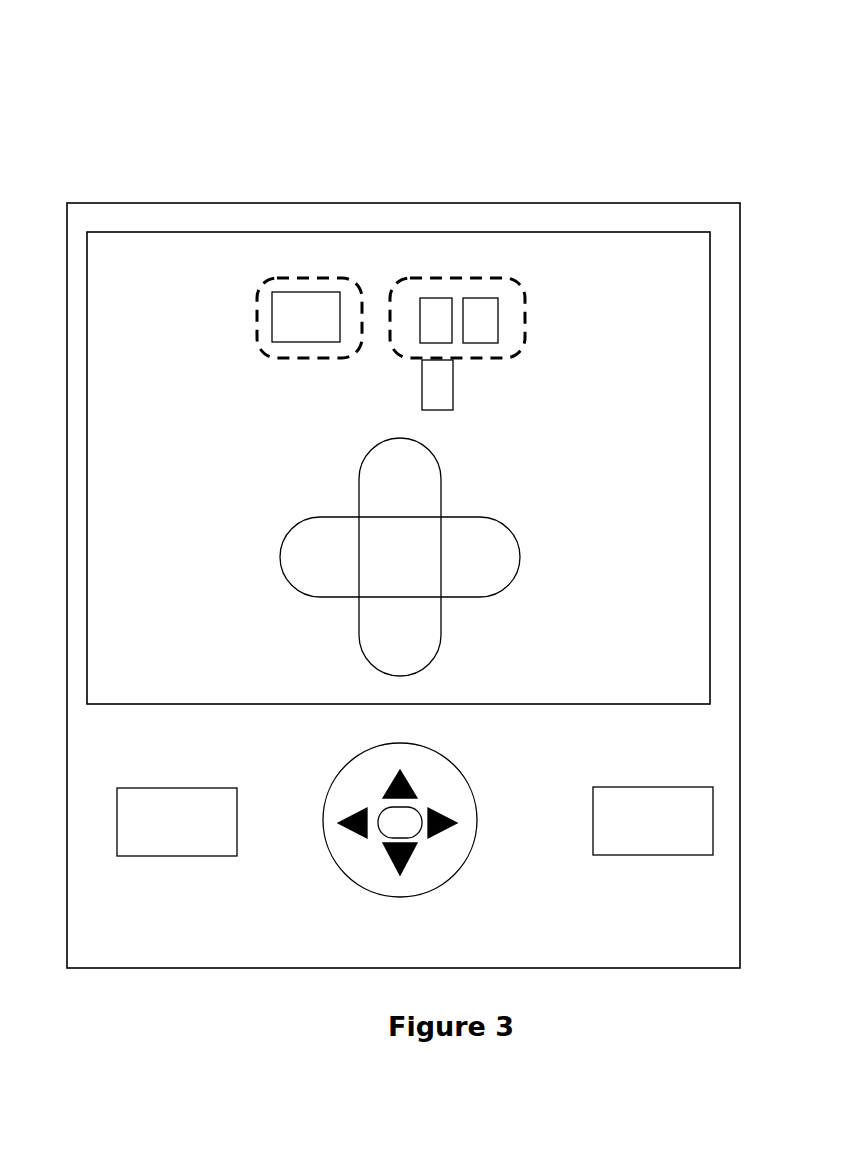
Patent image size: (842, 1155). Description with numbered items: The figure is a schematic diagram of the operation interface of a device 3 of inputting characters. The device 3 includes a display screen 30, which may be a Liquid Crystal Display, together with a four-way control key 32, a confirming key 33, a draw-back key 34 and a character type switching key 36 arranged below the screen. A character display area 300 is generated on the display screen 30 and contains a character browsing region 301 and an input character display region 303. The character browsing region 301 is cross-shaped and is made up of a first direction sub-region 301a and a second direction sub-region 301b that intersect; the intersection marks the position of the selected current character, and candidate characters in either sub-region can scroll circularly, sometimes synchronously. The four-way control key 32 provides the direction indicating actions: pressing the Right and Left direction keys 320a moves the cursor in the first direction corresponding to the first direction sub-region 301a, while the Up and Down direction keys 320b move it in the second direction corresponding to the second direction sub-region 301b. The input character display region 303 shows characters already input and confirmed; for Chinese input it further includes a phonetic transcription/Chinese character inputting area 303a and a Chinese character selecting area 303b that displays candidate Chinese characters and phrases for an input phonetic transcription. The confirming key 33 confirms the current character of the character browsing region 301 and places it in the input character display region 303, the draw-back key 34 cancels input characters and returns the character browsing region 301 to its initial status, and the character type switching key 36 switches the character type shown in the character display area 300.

The device of inputting characters 3 is at (338, 190).
The display screen 30 is at (682, 230).
The character display area 300 is at (628, 275).
The character browsing region 301 is at (548, 523).
The first direction sub-region 301a is at (460, 517).
The second direction sub-region 301b is at (440, 462).
The input character display region 303 is at (545, 313).
The phonetic transcription / Chinese character inputting area 303a is at (320, 278).
The Chinese character selecting area 303b is at (460, 278).
The four-way control key 32 is at (457, 815).
The Right and Left direction keys 320a is at (420, 828).
The Up and Down direction keys 320b is at (413, 788).
The confirming key 33 is at (378, 822).
The draw-back key 34 is at (203, 856).
The character type switching key 36 is at (697, 855).